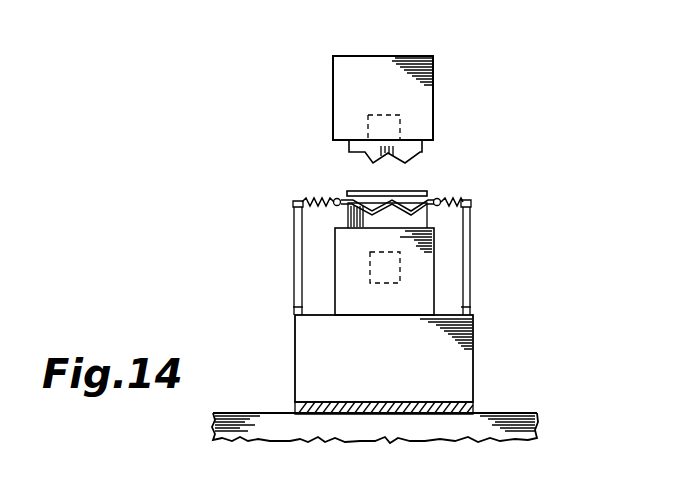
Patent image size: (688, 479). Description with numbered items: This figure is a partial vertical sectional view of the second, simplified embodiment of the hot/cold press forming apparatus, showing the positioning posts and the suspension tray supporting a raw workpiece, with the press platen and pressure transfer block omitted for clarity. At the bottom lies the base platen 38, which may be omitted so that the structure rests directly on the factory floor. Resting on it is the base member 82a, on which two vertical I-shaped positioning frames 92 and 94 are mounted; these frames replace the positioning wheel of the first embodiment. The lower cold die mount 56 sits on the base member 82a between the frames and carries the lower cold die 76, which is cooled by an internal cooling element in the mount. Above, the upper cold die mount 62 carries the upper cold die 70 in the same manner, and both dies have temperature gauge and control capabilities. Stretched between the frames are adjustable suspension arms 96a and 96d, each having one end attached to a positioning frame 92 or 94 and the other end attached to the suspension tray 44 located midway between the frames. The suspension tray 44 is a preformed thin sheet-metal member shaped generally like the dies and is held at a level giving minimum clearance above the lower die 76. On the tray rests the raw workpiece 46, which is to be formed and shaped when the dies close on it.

The upper cold die mount 62 is at (406, 100).
The upper cold die 70 is at (350, 144).
The raw workpiece 46 is at (408, 190).
The suspension tray 44 is at (432, 195).
The adjustable suspension arm 96a is at (314, 196).
The adjustable suspension arm 96d is at (450, 202).
The positioning frame 92 is at (293, 283).
The positioning frame 94 is at (471, 263).
The lower cold die 76 is at (361, 226).
The lower cold die mount 56 is at (408, 309).
The base member 82a is at (412, 370).
The base platen 38 is at (538, 420).